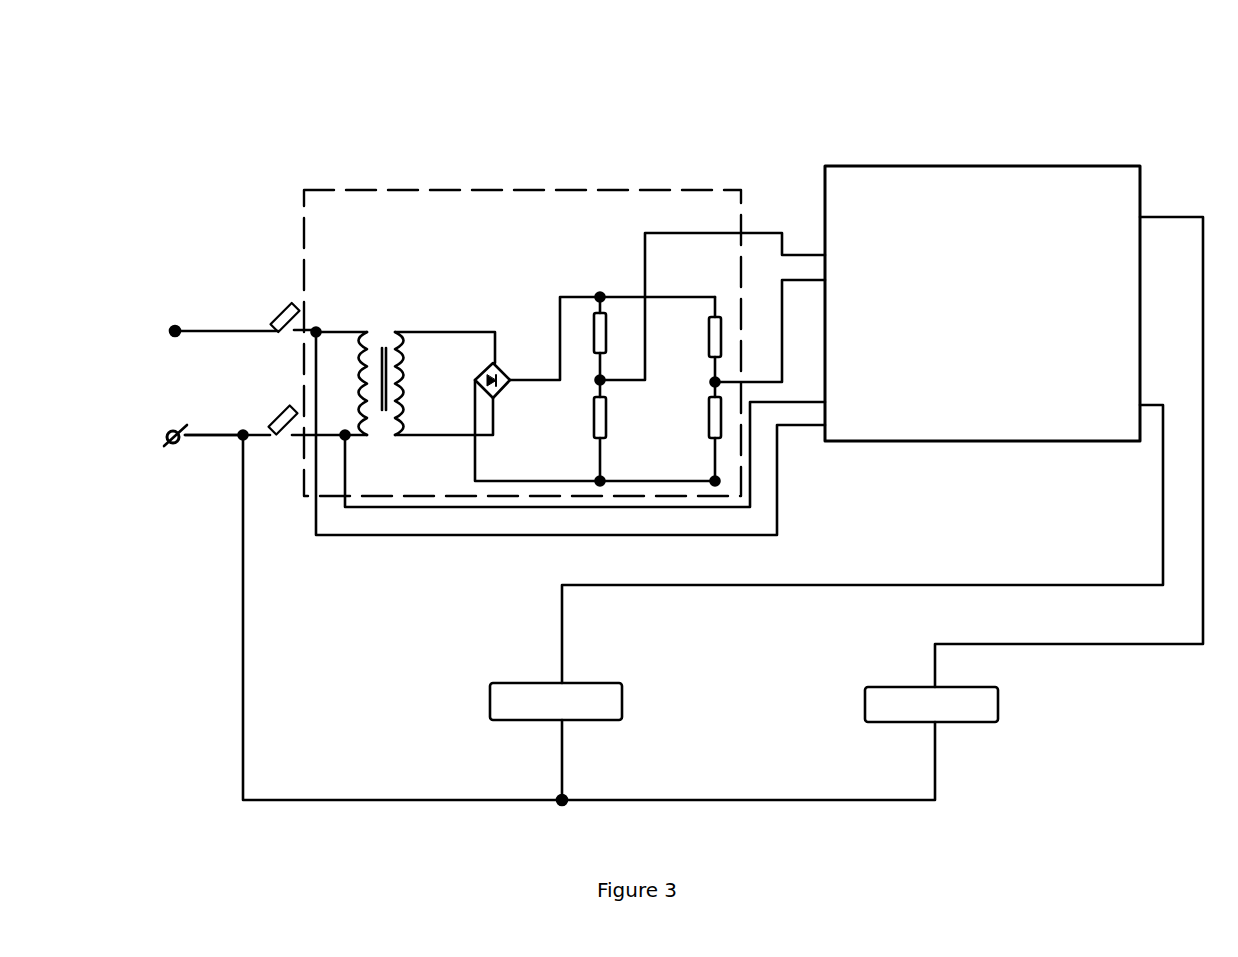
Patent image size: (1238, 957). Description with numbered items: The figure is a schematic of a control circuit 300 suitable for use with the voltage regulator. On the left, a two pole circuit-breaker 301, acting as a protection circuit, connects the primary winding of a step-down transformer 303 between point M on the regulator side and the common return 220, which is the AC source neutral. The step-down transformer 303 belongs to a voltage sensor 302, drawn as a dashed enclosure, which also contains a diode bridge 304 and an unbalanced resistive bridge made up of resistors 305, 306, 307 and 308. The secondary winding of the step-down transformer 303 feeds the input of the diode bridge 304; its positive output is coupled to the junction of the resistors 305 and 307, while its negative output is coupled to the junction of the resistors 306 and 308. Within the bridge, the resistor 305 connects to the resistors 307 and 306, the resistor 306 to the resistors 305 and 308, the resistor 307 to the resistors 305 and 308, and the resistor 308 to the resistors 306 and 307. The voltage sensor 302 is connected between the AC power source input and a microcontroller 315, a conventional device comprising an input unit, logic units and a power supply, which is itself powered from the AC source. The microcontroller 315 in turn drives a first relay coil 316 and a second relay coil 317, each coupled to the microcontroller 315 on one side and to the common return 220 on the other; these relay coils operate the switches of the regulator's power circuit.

The control circuit 300 is at (630, 422).
The two pole circuit-breaker 301 is at (275, 333).
The common return 220 is at (219, 427).
The voltage sensor 302 is at (617, 177).
The step-down transformer 303 is at (378, 327).
The diode bridge 304 is at (503, 355).
The resistor 305 is at (620, 313).
The resistor 306 is at (582, 413).
The resistor 307 is at (702, 313).
The resistor 308 is at (697, 414).
The microcontroller 315 is at (888, 163).
The first relay coil 316 is at (477, 693).
The second relay coil 317 is at (853, 696).